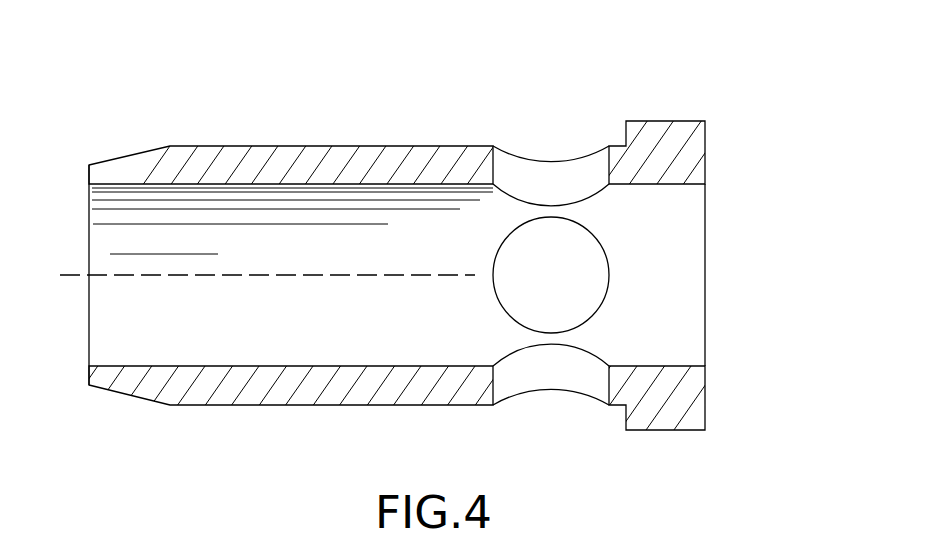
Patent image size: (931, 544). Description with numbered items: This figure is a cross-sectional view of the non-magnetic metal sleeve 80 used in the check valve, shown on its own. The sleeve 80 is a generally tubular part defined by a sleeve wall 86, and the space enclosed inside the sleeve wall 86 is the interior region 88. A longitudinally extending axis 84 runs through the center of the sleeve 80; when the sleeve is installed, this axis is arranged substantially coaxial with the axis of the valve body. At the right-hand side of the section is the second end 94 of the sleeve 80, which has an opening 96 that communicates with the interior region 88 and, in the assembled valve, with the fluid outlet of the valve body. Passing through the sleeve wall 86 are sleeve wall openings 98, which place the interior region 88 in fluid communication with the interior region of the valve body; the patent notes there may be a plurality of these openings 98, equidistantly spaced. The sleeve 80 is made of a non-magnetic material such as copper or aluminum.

The non-magnetic metal sleeve 80 is at (171, 98).
The longitudinally extending axis 84 is at (238, 280).
The sleeve wall 86 is at (404, 146).
The interior region 88 is at (330, 345).
The second end 94 is at (706, 152).
The opening 96 is at (690, 248).
The sleeve wall opening 98 is at (548, 173).